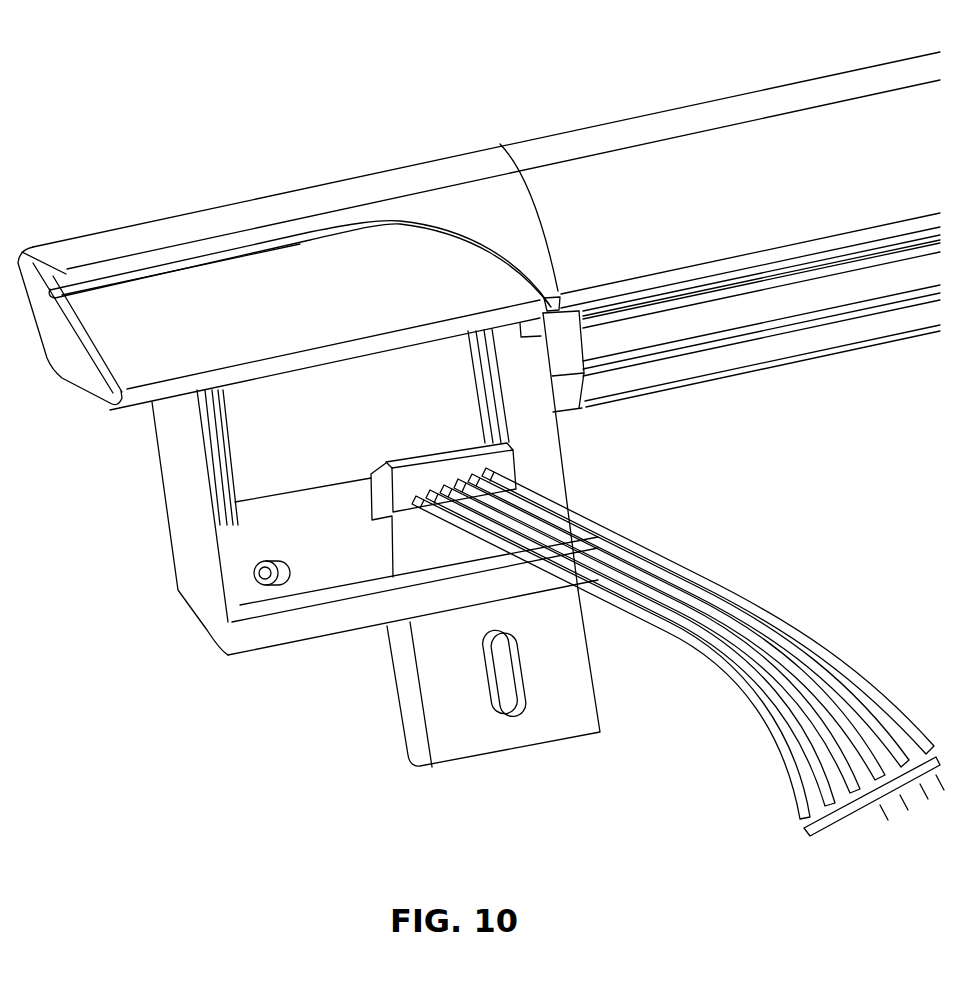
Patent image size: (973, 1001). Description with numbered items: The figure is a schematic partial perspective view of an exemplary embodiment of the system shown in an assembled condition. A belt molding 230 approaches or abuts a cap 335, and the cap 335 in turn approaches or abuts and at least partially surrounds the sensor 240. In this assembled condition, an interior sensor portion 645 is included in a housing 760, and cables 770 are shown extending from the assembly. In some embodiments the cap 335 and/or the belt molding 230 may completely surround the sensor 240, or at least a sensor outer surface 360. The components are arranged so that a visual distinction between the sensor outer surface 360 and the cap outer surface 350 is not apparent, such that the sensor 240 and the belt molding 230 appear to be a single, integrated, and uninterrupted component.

The belt molding 230 is at (635, 195).
The sensor 240 is at (202, 285).
The cap 335 is at (507, 213).
The cap outer surface 350 is at (483, 220).
The sensor outer surface 360 is at (343, 263).
The interior sensor portion 645 is at (288, 450).
The housing 760 is at (330, 623).
The cables 770 is at (763, 612).